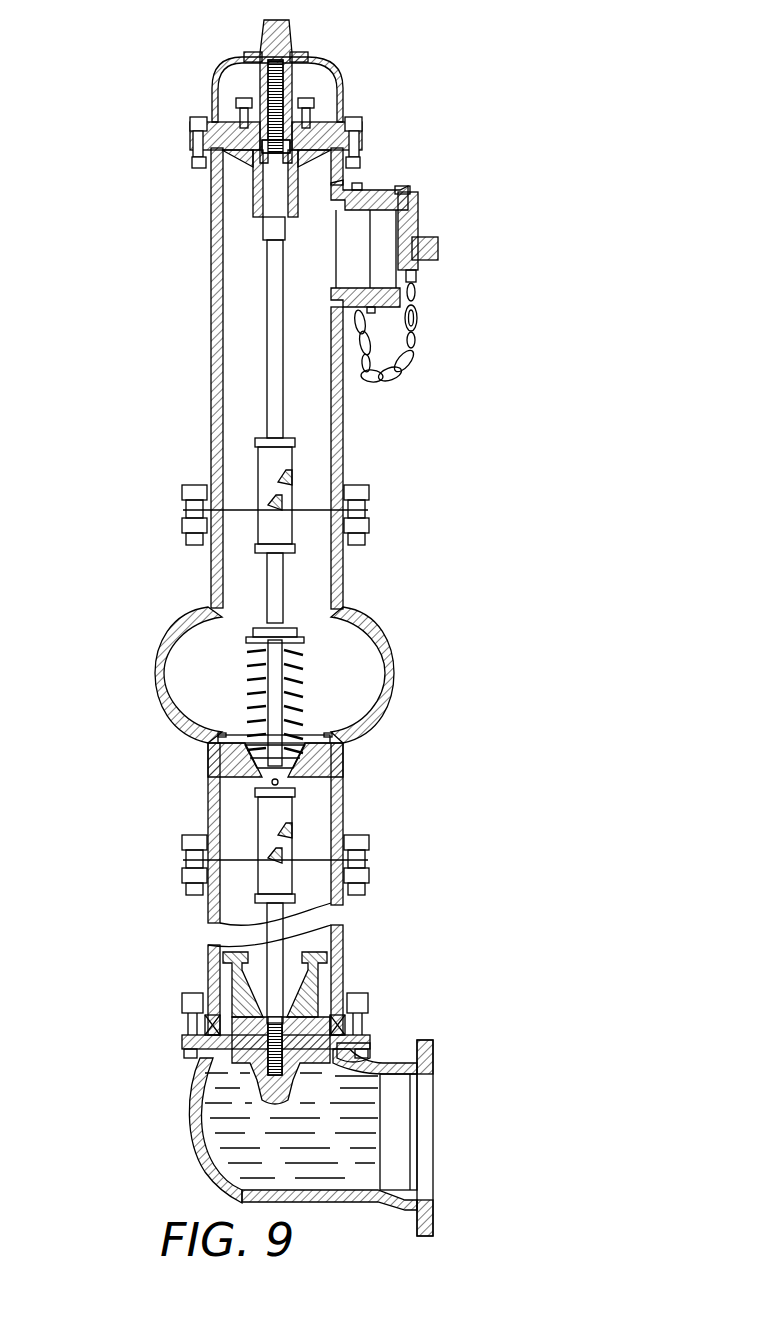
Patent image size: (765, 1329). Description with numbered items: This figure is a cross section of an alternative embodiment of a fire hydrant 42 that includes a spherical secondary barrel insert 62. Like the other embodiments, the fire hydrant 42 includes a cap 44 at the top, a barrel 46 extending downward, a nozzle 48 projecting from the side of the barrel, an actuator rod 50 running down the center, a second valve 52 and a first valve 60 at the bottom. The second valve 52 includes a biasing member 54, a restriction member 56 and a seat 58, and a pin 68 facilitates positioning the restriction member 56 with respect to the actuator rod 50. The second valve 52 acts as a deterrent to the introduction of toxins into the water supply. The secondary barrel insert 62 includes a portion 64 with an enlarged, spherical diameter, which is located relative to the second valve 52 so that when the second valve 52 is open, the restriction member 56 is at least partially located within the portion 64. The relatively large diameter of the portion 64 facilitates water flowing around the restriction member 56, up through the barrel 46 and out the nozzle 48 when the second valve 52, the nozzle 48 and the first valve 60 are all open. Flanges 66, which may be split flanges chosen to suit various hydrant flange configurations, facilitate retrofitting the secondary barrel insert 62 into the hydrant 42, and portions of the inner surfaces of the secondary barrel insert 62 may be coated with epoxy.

The fire hydrant 42 is at (387, 141).
The cap 44 is at (335, 72).
The barrel 46 is at (212, 240).
The nozzle 48 is at (412, 200).
The actuator rod 50 is at (272, 356).
The second valve 52 is at (344, 693).
The biasing member 54 is at (245, 650).
The restriction member 56 is at (232, 737).
The seat 58 is at (330, 752).
The first valve 60 is at (330, 992).
The secondary barrel insert 62 is at (344, 580).
The portion with an enlarged diameter 64 is at (151, 655).
The flanges 66 is at (176, 508).
The pin 68 is at (302, 630).